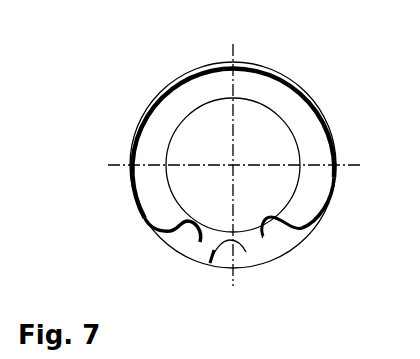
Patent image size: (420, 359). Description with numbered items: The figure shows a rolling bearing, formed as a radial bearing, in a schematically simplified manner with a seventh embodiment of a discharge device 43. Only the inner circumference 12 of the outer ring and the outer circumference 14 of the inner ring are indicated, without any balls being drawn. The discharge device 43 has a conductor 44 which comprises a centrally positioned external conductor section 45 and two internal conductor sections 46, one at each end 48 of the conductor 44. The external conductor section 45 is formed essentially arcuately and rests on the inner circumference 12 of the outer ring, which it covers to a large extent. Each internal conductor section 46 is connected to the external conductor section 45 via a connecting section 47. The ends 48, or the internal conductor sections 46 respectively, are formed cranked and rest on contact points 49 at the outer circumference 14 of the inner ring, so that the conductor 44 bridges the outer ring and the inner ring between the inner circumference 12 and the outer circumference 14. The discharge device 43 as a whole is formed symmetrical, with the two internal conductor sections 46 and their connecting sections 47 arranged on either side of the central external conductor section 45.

The discharge device 43 is at (137, 75).
The outer circumference 14 is at (215, 98).
The external conductor section 45 is at (256, 65).
The conductor 44 is at (137, 203).
The connecting section 47 is at (302, 215).
The end 48 is at (297, 233).
The contact point 49 is at (263, 213).
The internal conductor section 46 is at (268, 237).
The inner circumference 12 is at (246, 252).